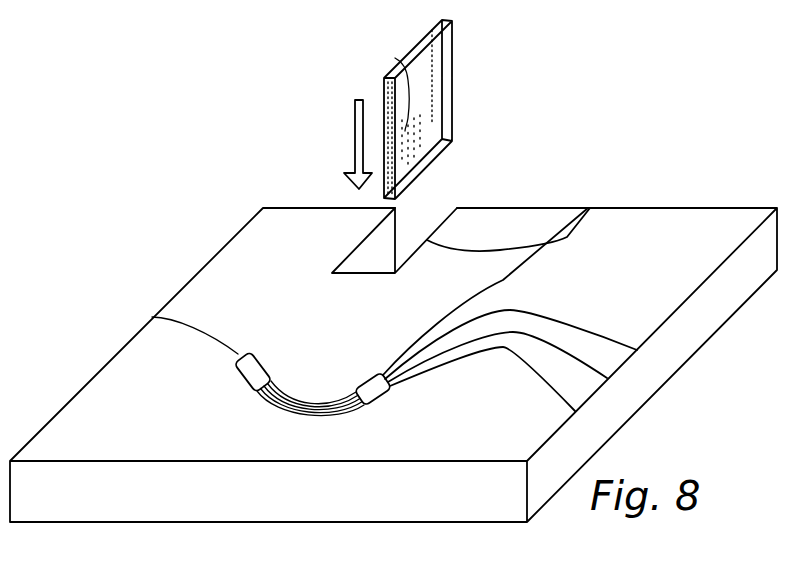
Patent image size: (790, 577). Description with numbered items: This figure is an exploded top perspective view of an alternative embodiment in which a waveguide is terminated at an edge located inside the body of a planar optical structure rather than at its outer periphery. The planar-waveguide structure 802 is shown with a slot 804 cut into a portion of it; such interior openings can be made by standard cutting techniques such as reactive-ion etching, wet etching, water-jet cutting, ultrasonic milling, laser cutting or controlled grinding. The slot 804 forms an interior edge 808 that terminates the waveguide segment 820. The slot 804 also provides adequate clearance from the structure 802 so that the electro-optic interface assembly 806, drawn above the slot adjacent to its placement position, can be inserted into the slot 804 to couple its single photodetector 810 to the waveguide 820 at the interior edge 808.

The planar-waveguide structure 802 is at (228, 507).
The slot 804 is at (350, 252).
The electro-optic interface assembly 806 is at (452, 46).
The interior edge 808 is at (442, 223).
The photodetector 810 is at (395, 58).
The waveguide segment 820 is at (500, 250).